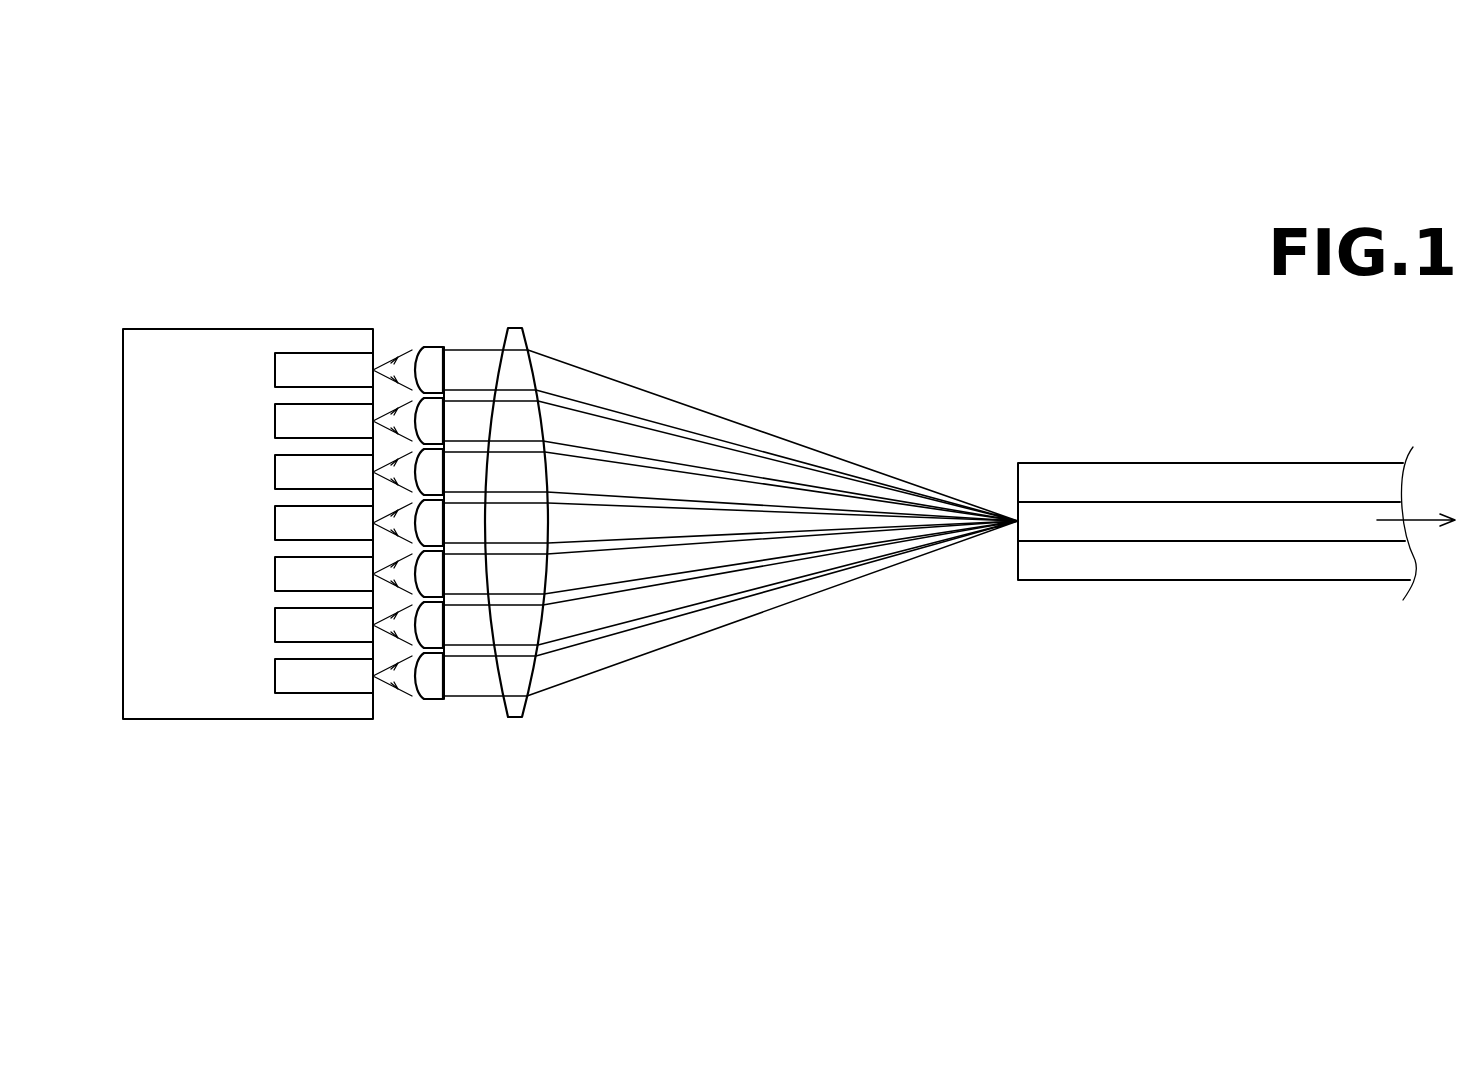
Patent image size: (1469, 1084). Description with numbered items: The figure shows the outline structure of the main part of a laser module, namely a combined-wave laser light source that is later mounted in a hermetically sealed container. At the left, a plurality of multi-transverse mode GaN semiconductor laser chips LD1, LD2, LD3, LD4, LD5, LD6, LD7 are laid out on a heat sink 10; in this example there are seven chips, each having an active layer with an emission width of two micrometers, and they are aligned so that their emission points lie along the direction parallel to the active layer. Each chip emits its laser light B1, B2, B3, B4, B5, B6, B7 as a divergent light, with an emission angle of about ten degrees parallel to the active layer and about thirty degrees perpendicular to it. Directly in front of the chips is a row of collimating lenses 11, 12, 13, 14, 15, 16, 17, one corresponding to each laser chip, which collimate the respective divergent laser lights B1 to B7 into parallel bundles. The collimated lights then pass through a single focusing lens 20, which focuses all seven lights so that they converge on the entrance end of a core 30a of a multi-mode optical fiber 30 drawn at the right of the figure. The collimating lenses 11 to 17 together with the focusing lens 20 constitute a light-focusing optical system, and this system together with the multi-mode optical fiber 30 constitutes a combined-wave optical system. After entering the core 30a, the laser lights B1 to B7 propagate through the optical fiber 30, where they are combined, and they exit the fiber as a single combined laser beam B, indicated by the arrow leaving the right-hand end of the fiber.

The heat sink 10 is at (143, 343).
The laser chip LD1 is at (283, 374).
The laser chip LD2 is at (283, 425).
The laser chip LD3 is at (283, 476).
The laser chip LD4 is at (283, 527).
The laser chip LD5 is at (283, 578).
The laser chip LD6 is at (283, 629).
The laser chip LD7 is at (283, 680).
The collimating lens 11 is at (432, 360).
The collimating lens 12 is at (435, 415).
The collimating lens 13 is at (437, 466).
The collimating lens 14 is at (438, 518).
The collimating lens 15 is at (432, 572).
The collimating lens 16 is at (432, 620).
The collimating lens 17 is at (432, 680).
The focusing lens 20 is at (528, 333).
The laser light B1 is at (630, 392).
The laser light B2 is at (678, 450).
The laser light B3 is at (720, 488).
The laser light B4 is at (768, 520).
The laser light B5 is at (660, 565).
The laser light B6 is at (724, 590).
The laser light B7 is at (783, 600).
The multi-mode optical fiber 30 is at (1133, 462).
The core 30a is at (1036, 520).
The laser beam B is at (1427, 525).